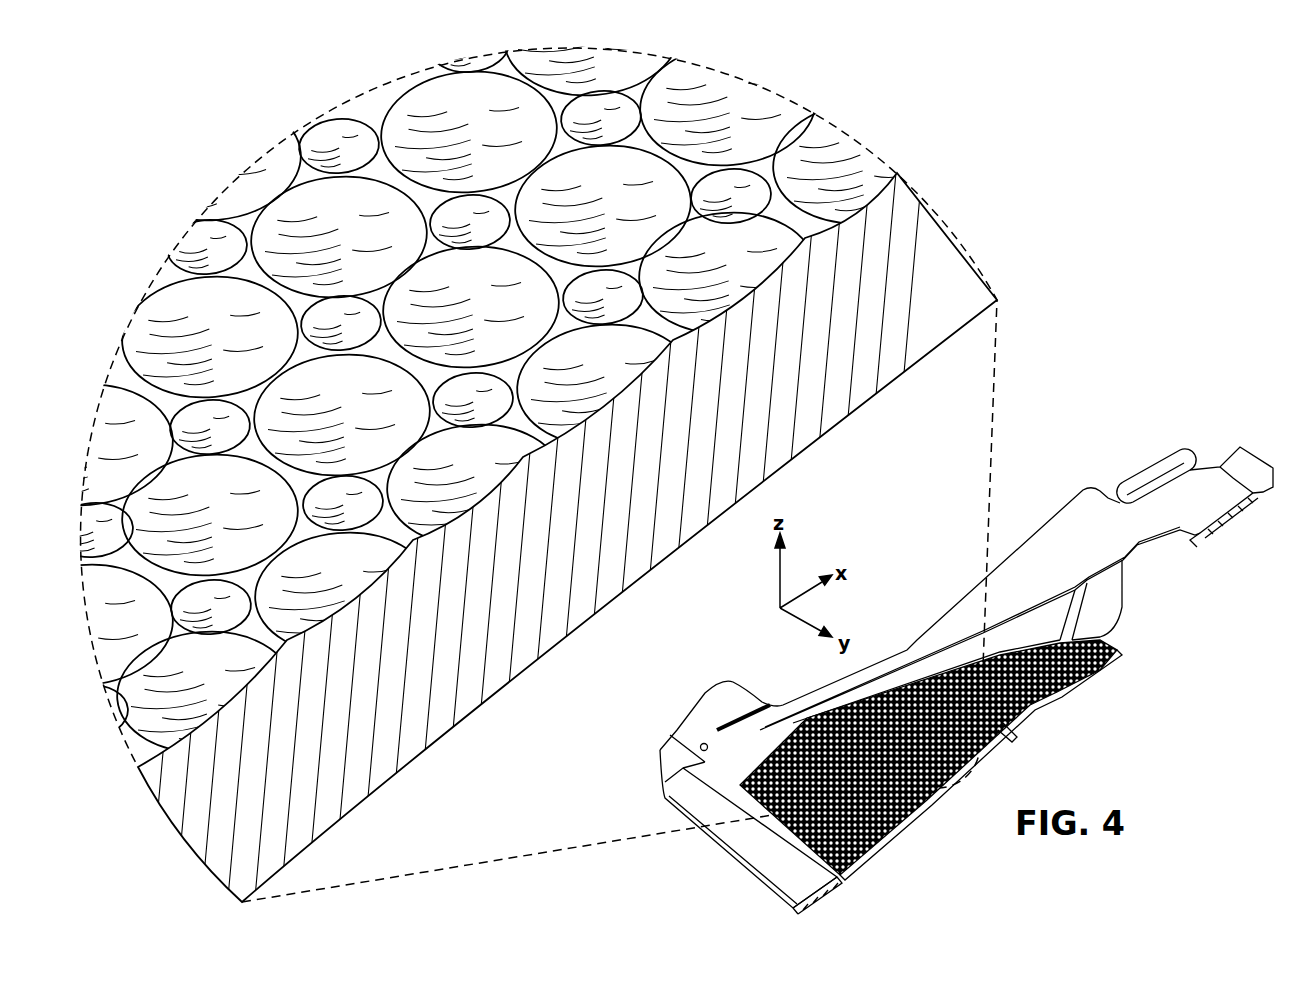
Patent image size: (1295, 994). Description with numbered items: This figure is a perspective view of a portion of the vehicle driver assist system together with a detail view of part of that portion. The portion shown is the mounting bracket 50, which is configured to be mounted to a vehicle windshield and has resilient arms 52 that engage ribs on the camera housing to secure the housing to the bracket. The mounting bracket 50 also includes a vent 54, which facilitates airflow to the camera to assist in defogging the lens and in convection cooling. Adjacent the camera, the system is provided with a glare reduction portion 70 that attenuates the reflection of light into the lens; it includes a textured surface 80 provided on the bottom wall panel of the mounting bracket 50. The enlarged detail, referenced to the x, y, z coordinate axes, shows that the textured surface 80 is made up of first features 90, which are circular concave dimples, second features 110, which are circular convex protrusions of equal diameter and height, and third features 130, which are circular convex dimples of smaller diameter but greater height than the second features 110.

The mounting bracket 50 is at (1207, 478).
The resilient arms 52 is at (1147, 475).
The vent 54 is at (827, 892).
The glare reduction portion 70 is at (966, 658).
The textured surface 80 is at (868, 852).
The first features 90 is at (833, 197).
The second features 110 is at (723, 257).
The third features 130 is at (470, 220).